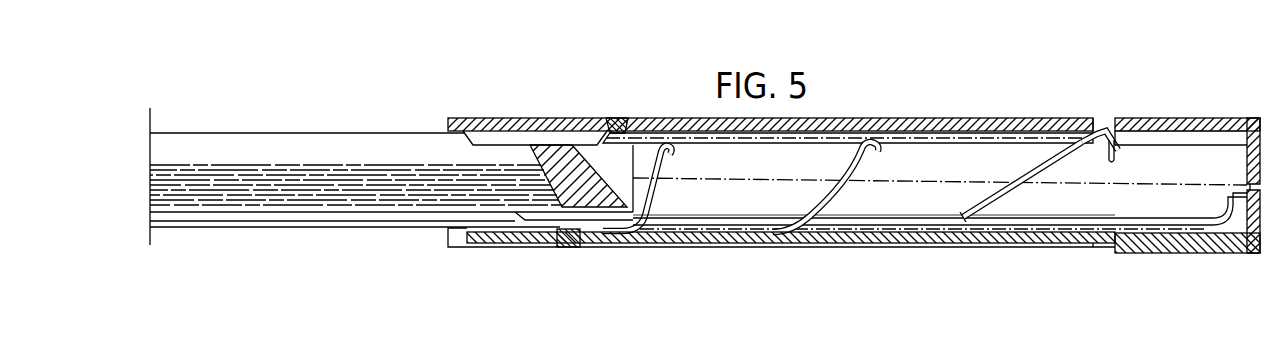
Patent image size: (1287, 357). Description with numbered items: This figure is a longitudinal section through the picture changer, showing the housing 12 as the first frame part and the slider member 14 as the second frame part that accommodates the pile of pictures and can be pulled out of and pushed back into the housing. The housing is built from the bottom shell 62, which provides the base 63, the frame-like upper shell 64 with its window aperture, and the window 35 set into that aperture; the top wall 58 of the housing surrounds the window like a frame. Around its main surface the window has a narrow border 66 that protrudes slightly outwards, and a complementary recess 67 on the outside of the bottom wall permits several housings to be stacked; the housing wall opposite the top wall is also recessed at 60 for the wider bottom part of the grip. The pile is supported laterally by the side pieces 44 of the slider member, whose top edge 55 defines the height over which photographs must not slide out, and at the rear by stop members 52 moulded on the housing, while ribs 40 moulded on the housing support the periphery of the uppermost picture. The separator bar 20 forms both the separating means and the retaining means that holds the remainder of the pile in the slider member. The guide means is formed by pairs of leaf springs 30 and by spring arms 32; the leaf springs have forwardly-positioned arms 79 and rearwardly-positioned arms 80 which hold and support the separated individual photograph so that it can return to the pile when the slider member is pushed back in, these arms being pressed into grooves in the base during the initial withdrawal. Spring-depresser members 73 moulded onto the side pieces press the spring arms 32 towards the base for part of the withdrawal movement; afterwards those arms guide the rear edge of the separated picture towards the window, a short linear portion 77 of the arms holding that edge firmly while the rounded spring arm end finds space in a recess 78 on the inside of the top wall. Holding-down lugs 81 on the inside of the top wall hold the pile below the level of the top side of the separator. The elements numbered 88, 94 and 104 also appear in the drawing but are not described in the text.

The housing 12 is at (1201, 118).
The slider member 14 is at (336, 231).
The separator bar 20 is at (533, 144).
The leaf springs 30 is at (664, 244).
The spring arms 32 is at (992, 198).
The window 35 is at (928, 117).
The ribs 40 is at (1148, 147).
The side pieces 44 is at (327, 147).
The stop members 52 is at (1111, 164).
The top edge 55 is at (237, 132).
The top wall 58 is at (476, 117).
The recess 60 is at (517, 244).
The bottom shell 62 is at (1191, 254).
The base 63 is at (922, 244).
The upper shell 64 is at (1130, 143).
The border 66 is at (620, 117).
The recess 67 is at (713, 244).
The spring-depresser members 73 is at (557, 247).
The linear portion 77 is at (1093, 147).
The recess 78 is at (1103, 130).
The forwardly-positioned arms 79 is at (674, 152).
The rearwardly-positioned arms 80 is at (881, 149).
The holding-down lugs 81 is at (578, 132).
The end wall 88 is at (1262, 160).
The bottom wall 94 is at (1107, 250).
The lip 104 is at (1220, 214).